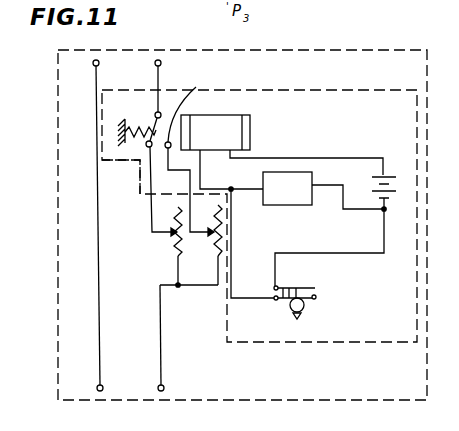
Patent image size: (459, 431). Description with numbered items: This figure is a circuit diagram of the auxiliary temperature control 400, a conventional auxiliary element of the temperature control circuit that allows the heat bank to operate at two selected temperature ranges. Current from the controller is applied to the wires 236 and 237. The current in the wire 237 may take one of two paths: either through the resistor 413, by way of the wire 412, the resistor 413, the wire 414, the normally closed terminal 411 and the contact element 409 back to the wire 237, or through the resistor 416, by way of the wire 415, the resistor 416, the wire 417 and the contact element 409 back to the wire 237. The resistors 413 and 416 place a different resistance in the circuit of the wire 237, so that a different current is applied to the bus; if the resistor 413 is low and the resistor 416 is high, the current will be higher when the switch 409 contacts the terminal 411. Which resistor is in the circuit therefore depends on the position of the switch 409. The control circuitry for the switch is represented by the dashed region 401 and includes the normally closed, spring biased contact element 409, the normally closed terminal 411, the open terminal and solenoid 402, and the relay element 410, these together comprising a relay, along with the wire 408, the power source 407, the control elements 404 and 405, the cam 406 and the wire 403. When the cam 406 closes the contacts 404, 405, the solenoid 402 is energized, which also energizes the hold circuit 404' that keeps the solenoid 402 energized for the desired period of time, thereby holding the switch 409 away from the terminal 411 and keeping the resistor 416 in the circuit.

The wire 236 is at (104, 68).
The wire 237 is at (168, 68).
The auxiliary temperature control 400 is at (183, 49).
The control circuitry 401 is at (378, 89).
The solenoid 402 is at (243, 114).
The wire 403 is at (235, 301).
The control element 404 is at (329, 255).
The hold circuit 404' is at (323, 201).
The control element 405 is at (317, 298).
The cam 406 is at (300, 315).
The power source 407 is at (384, 175).
The wire 408 is at (275, 158).
The spring biased contact element 409 is at (154, 116).
The relay armature element 410 is at (198, 110).
The normally closed terminal 411 is at (139, 161).
The wire 412 is at (176, 271).
The resistor 413 is at (176, 243).
The wire 414 is at (150, 212).
The wire 415 is at (219, 264).
The resistor 416 is at (220, 241).
The wire 417 is at (199, 183).